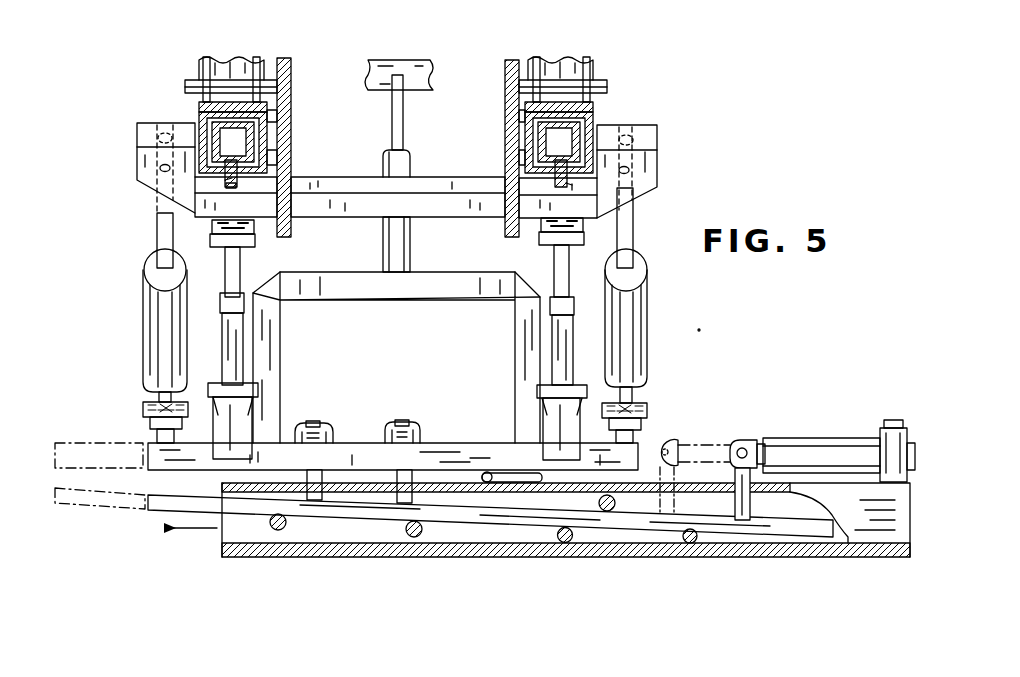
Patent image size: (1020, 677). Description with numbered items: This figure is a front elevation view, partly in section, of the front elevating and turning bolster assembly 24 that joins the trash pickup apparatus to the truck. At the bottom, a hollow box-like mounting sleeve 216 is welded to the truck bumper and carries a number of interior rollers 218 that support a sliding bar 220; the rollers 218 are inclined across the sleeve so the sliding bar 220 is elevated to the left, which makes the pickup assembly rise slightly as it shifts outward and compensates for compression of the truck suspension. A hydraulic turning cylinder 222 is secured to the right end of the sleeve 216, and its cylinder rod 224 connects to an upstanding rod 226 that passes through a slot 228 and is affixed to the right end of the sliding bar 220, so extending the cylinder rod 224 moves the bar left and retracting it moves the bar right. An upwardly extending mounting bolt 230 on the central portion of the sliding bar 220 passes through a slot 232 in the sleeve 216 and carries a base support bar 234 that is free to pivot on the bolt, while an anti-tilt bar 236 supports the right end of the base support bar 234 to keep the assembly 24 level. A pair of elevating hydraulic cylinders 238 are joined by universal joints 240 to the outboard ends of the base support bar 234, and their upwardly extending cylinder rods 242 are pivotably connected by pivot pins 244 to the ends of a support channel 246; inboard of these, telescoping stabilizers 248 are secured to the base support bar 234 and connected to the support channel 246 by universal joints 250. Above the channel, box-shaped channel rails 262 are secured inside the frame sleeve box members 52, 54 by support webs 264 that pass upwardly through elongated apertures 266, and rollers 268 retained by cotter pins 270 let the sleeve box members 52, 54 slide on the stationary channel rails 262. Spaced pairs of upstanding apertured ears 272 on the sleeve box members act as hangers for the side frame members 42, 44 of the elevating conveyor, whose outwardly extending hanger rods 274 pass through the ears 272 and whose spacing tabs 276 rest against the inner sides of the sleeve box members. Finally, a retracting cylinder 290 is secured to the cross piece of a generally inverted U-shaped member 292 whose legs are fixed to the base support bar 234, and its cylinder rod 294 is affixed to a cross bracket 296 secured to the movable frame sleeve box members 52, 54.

The mounting and elevating assembly 24 is at (700, 329).
The side frame member 42 is at (291, 82).
The side frame member 44 is at (506, 76).
The frame sleeve box member 52 is at (199, 107).
The frame sleeve box member 54 is at (594, 107).
The mounting sleeve 216 is at (273, 548).
The rollers 218 is at (288, 523).
The sliding bar 220 is at (165, 500).
The hydraulic turning cylinder 222 is at (793, 445).
The cylinder rod 224 is at (723, 445).
The upstanding rod 226 is at (750, 506).
The slot 228 is at (682, 495).
The mounting bolt 230 is at (418, 470).
The slot 232 is at (373, 483).
The base support bar 234 is at (495, 448).
The anti-tilt bar 236 is at (513, 476).
The elevating hydraulic cylinders 238 is at (162, 308).
The universal joints 240 is at (150, 408).
The cylinder rods 242 is at (165, 232).
The pivot pins 244 is at (160, 168).
The support channel 246 is at (375, 182).
The telescoping stabilizers 248 is at (232, 367).
The universal joints 250 is at (262, 250).
The channel rails 262 is at (160, 133).
The support webs 264 is at (225, 180).
The elongated apertures 266 is at (245, 200).
The rollers 268 is at (288, 127).
The cotter pins 270 is at (268, 110).
The apertured ears 272 is at (590, 66).
The hanger rods 274 is at (185, 85).
The spacing tabs 276 is at (268, 158).
The retracting cylinder 290 is at (393, 240).
The inverted U-shaped member 292 is at (270, 327).
The cylinder rod 294 is at (401, 104).
The cross bracket 296 is at (423, 70).